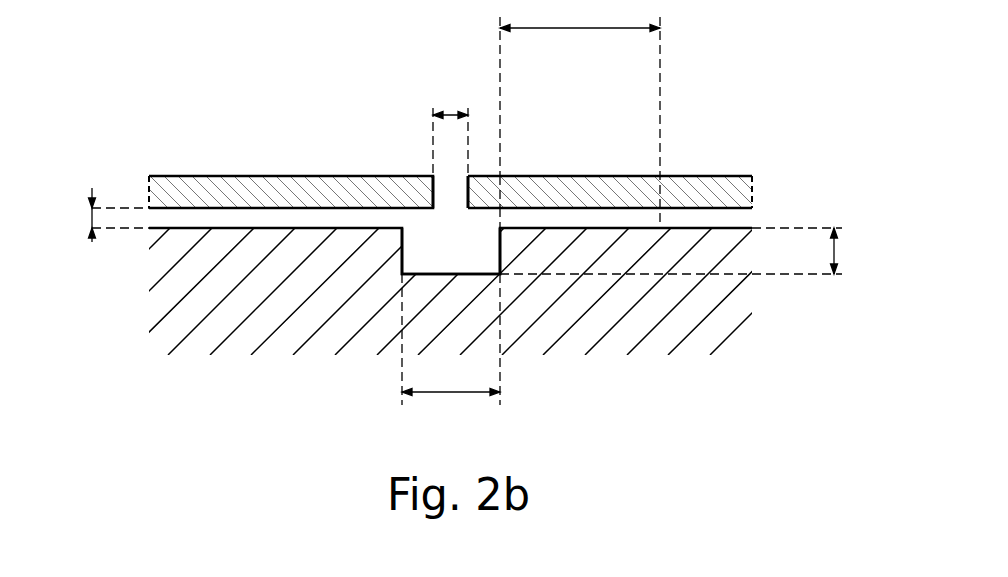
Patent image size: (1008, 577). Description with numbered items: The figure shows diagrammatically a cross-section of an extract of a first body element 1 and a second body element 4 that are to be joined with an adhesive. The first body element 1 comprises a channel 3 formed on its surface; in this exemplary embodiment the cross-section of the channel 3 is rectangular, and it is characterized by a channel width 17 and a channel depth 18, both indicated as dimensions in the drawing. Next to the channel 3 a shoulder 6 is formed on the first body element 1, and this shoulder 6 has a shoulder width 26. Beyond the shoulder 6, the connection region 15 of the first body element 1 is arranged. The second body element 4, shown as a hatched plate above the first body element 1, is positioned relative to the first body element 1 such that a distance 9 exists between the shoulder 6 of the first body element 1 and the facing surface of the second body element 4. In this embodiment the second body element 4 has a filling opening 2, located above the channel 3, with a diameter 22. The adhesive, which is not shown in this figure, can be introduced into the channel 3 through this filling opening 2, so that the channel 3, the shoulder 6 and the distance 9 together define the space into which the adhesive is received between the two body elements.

The first body element 1 is at (718, 323).
The filling opening 2 is at (447, 193).
The channel 3 is at (424, 247).
The second body element 4 is at (622, 193).
The shoulder 6 is at (554, 228).
The distance 9 is at (108, 215).
The connection region 15 is at (722, 228).
The channel width 17 is at (451, 348).
The channel depth 18 is at (687, 251).
The diameter 22 is at (450, 128).
The shoulder width 26 is at (580, 114).